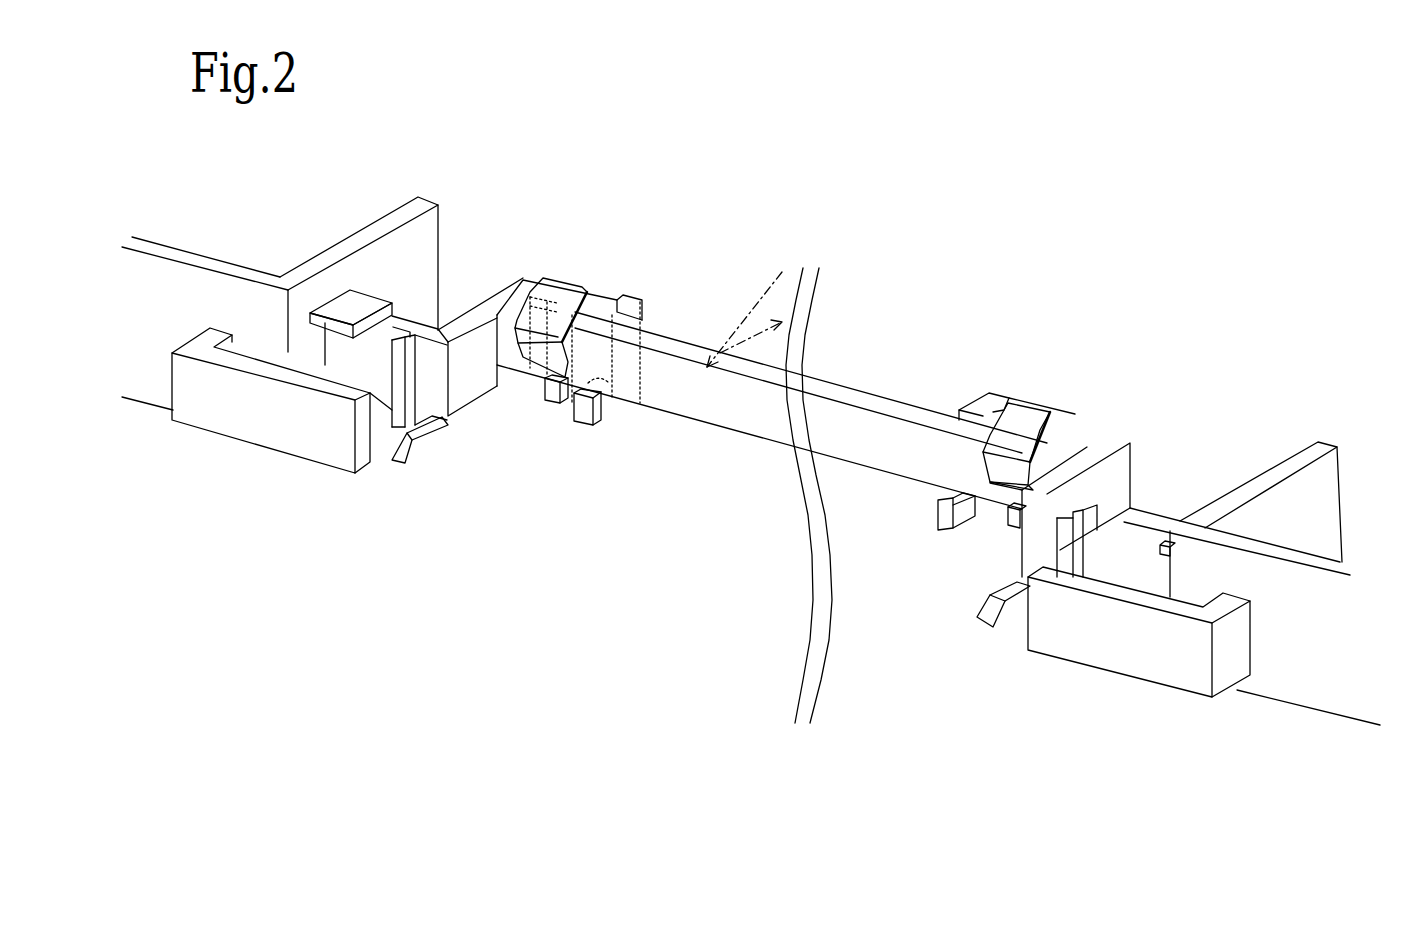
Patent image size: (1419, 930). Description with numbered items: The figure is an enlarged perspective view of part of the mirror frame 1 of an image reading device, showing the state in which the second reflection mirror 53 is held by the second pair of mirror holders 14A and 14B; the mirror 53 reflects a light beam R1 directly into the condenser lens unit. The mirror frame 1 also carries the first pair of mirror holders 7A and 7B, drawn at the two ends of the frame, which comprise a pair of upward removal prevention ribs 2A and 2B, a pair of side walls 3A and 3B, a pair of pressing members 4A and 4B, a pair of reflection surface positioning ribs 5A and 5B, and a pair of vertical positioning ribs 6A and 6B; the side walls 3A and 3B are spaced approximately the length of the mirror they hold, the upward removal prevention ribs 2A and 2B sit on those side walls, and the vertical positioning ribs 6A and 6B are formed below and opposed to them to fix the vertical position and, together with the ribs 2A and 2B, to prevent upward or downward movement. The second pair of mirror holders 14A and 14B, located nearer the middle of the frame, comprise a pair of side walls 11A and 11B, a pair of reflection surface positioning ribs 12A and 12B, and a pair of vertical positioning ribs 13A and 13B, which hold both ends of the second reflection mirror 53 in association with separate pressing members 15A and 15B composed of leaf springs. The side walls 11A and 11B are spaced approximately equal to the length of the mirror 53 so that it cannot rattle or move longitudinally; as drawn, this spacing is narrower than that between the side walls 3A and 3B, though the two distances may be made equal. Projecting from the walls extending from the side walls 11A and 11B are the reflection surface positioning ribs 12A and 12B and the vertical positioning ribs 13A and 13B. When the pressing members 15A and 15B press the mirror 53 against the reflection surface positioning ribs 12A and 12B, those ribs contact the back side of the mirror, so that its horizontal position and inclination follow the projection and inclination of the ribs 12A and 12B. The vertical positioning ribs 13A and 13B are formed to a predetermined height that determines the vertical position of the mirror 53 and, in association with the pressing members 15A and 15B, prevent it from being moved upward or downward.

The mirror frame 1 is at (463, 168).
The upward removal prevention rib 2A is at (323, 320).
The side wall 3A is at (317, 362).
The pressing member 4A is at (330, 452).
The reflection surface positioning rib 5A is at (388, 430).
The vertical positioning rib 6A is at (420, 467).
The mirror holder 7A is at (315, 437).
The side wall 11A is at (480, 390).
The reflection surface positioning rib 12A is at (548, 397).
The vertical positioning rib 13A is at (584, 444).
The mirror holder 14A is at (540, 420).
The pressing member 15A is at (563, 283).
The upward removal prevention rib 2B is at (1173, 552).
The side wall 3B is at (1170, 578).
The pressing member 4B is at (1082, 653).
The reflection surface positioning rib 5B is at (1065, 560).
The vertical positioning rib 6B is at (981, 653).
The mirror holder 7B is at (1085, 651).
The side wall 11B is at (1015, 555).
The reflection surface positioning rib 12B is at (1010, 520).
The vertical positioning rib 13B is at (913, 529).
The mirror holder 14B is at (980, 511).
The pressing member 15B is at (1023, 410).
The second reflection mirror 53 is at (717, 417).
The light beam R1 is at (743, 322).